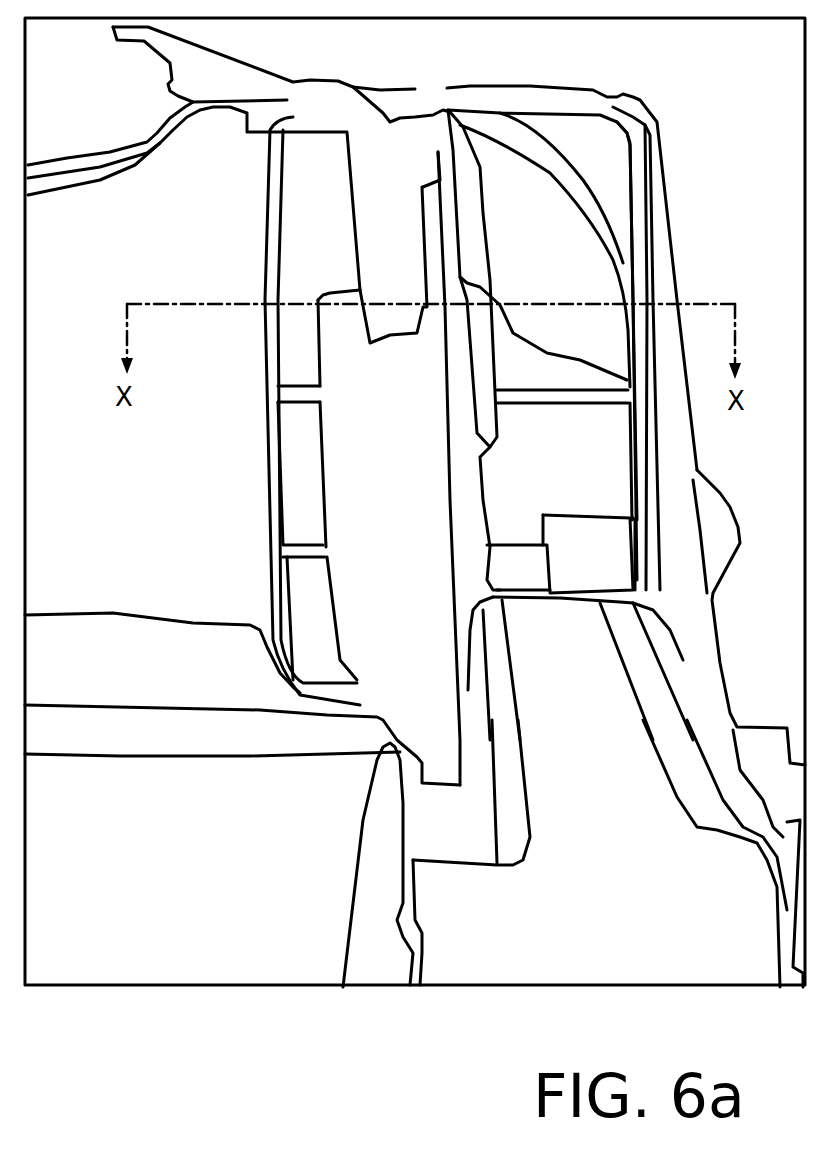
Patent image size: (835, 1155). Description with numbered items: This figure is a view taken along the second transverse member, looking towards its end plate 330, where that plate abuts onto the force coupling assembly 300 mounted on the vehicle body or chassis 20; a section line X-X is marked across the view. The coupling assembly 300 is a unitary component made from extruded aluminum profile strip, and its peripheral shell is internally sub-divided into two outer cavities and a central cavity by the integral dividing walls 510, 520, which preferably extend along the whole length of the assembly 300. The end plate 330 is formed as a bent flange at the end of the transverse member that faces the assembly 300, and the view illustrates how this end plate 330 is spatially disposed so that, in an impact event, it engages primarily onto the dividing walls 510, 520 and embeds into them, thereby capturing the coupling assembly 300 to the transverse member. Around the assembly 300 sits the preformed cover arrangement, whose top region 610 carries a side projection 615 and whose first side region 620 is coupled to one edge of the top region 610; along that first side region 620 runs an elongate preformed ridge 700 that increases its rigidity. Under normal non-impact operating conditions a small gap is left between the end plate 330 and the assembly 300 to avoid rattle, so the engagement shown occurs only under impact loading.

The body or chassis 20 is at (600, 698).
The coupling assembly 300 is at (268, 347).
The end plate 330 is at (335, 320).
The integral dividing wall 510 is at (295, 395).
The integral dividing wall 520 is at (298, 550).
The top region 610 is at (447, 100).
The side projection 615 is at (200, 67).
The first side region 620 is at (667, 282).
The elongate preformed ridge 700 is at (723, 537).